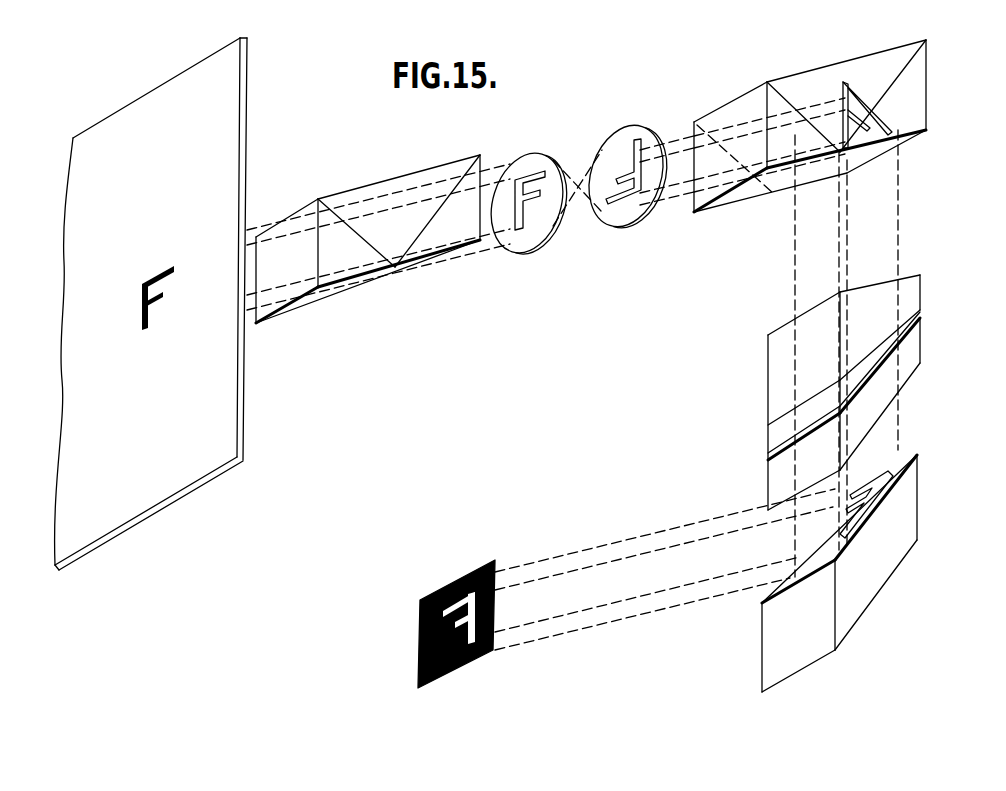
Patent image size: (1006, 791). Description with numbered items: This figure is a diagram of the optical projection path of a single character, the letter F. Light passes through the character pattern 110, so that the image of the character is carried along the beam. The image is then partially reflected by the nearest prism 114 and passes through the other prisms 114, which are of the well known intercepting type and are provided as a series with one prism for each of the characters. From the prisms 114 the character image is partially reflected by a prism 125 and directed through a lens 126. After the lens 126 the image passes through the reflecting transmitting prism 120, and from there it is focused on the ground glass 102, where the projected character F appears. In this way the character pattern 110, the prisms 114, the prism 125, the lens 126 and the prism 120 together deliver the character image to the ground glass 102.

The ground glass 102 is at (240, 395).
The reflecting transmitting prism 120 is at (410, 233).
The lens 126 is at (577, 200).
The prism 125 is at (917, 75).
The prism 114 is at (915, 295).
The character pattern 110 is at (432, 590).